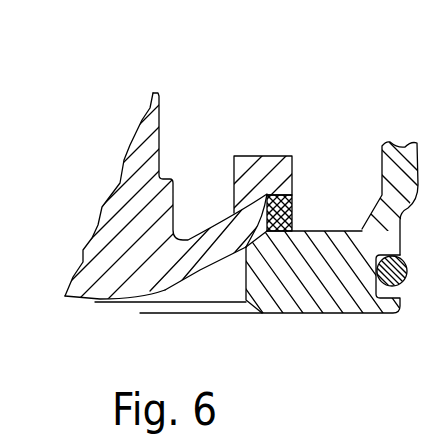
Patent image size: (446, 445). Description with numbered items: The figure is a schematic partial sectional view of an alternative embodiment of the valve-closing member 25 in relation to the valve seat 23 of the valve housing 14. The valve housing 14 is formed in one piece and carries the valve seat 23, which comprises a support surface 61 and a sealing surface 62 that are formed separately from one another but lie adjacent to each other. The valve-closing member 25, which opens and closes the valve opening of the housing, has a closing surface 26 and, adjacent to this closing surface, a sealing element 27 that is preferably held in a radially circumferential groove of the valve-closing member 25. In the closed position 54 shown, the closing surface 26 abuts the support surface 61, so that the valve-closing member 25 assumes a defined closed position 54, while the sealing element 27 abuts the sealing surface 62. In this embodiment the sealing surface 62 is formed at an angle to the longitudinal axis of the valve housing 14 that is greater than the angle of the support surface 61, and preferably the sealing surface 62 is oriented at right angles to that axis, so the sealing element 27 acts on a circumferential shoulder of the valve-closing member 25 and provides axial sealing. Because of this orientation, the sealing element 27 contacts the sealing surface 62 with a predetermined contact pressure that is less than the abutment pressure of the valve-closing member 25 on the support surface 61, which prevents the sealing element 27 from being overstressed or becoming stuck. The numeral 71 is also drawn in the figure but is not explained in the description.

The valve housing 14 is at (330, 303).
The valve seat 23 is at (257, 232).
The valve-closing member 25 is at (125, 244).
The closing surface 26 is at (167, 291).
The sealing element 27 is at (296, 218).
The closed position 54 is at (218, 281).
The support surface 61 is at (249, 247).
The sealing surface 62 is at (314, 222).
The O-ring 71 is at (409, 441).